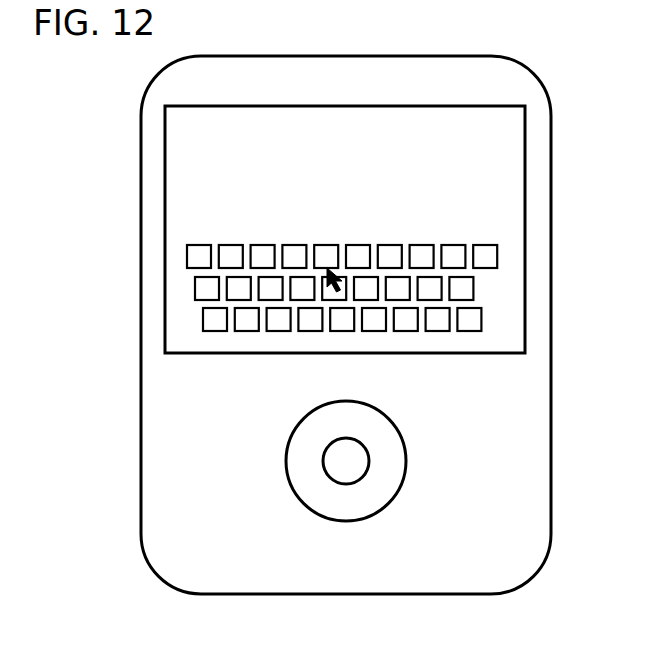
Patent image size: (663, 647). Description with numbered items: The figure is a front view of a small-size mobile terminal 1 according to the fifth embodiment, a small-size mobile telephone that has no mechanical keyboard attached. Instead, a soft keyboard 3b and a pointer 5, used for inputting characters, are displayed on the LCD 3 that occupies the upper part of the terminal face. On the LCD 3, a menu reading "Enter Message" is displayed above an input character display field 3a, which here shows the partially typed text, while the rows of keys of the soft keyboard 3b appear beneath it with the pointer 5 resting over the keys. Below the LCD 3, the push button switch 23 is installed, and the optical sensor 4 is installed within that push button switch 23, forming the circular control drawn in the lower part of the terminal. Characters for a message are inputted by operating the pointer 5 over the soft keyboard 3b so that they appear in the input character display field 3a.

The small-size mobile terminal 1 is at (551, 140).
The LCD 3 is at (497, 184).
The input character display field 3a is at (197, 176).
The soft keyboard 3b is at (197, 313).
The pointer 5 is at (332, 262).
The push button switch 23 is at (378, 435).
The optical sensor 4 is at (346, 462).